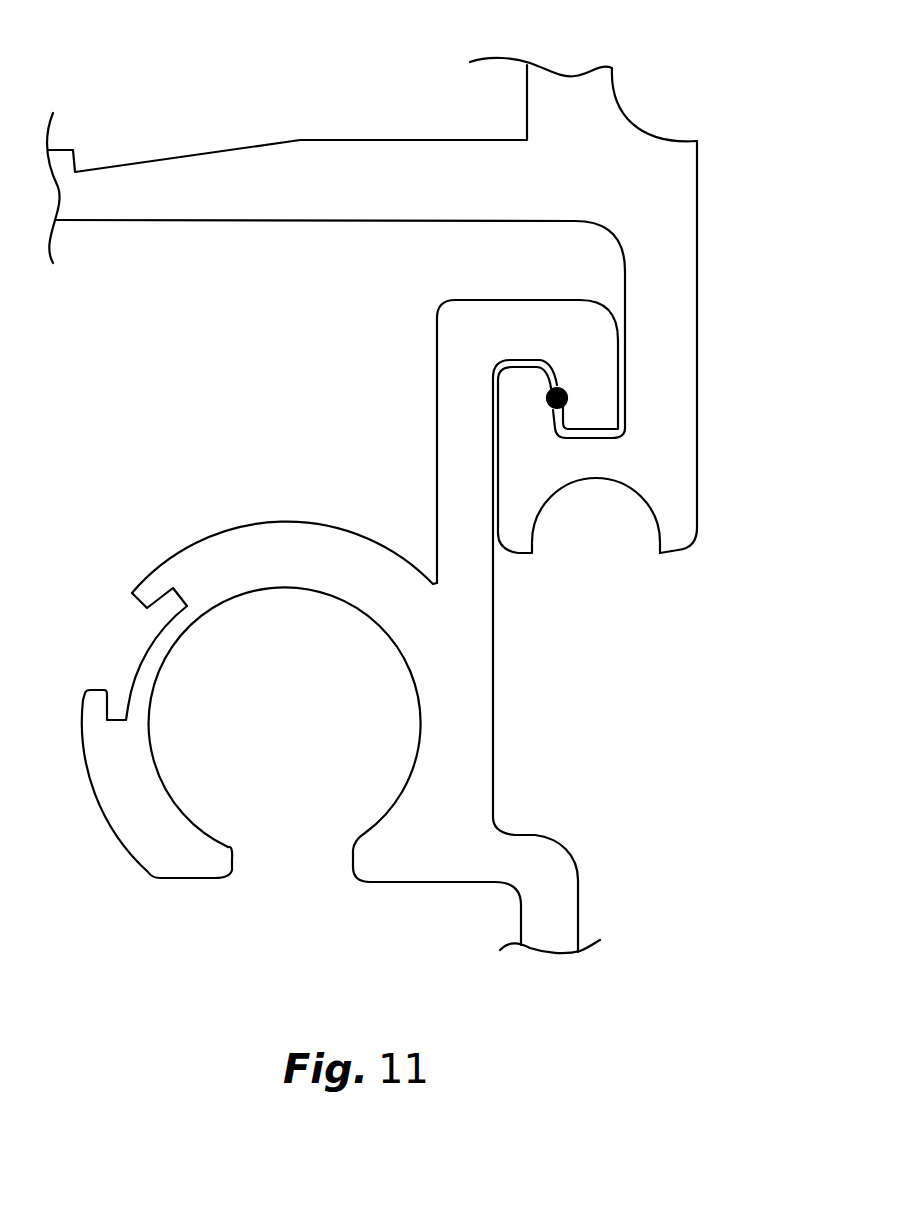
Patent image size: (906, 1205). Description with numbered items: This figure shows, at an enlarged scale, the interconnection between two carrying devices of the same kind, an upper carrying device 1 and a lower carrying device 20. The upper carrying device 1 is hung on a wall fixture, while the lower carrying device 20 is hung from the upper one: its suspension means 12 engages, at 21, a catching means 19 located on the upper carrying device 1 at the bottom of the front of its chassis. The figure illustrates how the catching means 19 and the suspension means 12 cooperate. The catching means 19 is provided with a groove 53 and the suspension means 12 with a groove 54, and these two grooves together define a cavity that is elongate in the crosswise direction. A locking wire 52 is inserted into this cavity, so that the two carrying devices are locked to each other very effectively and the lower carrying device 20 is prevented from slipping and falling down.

The upper carrying device 1 is at (665, 117).
The suspension means 12 is at (478, 333).
The catching means 19 is at (518, 453).
The lower carrying device 20 is at (620, 877).
The engagement point of suspension means with catching means 21 is at (748, 637).
The locking wire 52 is at (548, 400).
The groove 53 is at (540, 390).
The groove 54 is at (590, 398).